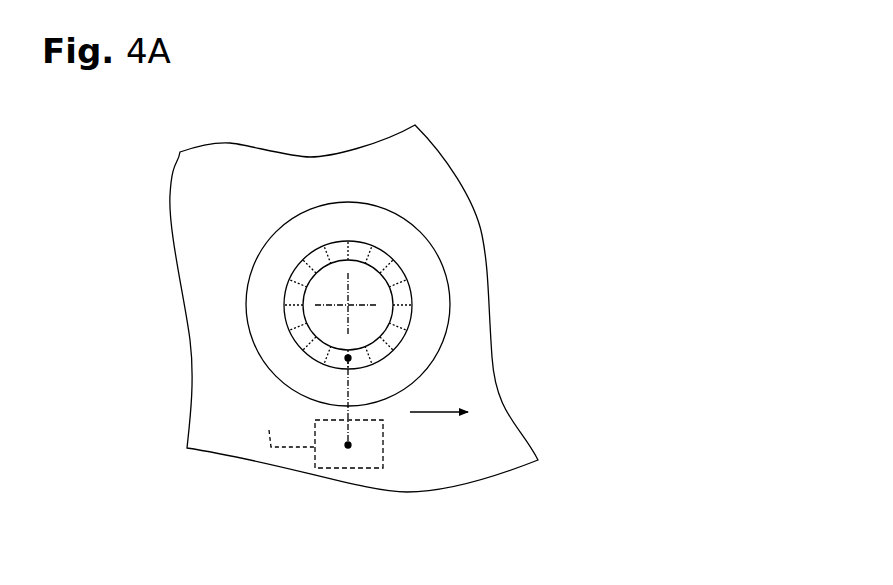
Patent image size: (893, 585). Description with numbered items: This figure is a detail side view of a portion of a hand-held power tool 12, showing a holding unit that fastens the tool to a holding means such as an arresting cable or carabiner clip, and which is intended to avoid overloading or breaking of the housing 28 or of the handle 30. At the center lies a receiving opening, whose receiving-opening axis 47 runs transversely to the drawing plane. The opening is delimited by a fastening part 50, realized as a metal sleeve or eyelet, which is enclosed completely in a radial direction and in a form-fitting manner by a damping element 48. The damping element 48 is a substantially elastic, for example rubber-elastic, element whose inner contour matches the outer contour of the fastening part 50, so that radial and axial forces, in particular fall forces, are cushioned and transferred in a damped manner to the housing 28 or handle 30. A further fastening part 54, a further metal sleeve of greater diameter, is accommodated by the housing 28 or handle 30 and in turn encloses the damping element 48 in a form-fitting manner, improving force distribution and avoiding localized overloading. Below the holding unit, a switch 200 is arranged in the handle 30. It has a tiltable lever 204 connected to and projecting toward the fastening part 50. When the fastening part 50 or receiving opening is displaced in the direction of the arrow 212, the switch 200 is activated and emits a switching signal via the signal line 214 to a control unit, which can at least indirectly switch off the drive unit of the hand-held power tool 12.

The hand-held power tool 12 is at (190, 192).
The housing 28 is at (257, 163).
The handle 30 is at (297, 141).
The further fastening part 54 is at (412, 222).
The damping element 48 is at (415, 252).
The receiving-opening axis 47 is at (348, 305).
The fastening part 50 is at (392, 312).
The lever 204 is at (350, 385).
The switch 200 is at (367, 458).
The signal line 214 is at (293, 447).
The arrow 212 is at (432, 412).